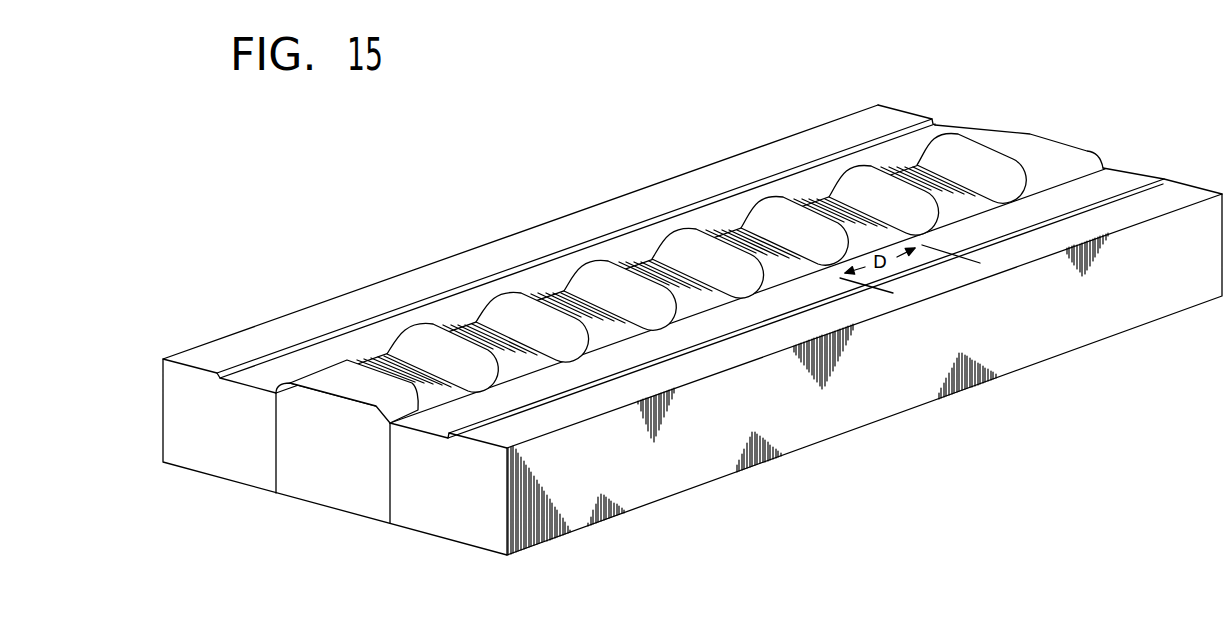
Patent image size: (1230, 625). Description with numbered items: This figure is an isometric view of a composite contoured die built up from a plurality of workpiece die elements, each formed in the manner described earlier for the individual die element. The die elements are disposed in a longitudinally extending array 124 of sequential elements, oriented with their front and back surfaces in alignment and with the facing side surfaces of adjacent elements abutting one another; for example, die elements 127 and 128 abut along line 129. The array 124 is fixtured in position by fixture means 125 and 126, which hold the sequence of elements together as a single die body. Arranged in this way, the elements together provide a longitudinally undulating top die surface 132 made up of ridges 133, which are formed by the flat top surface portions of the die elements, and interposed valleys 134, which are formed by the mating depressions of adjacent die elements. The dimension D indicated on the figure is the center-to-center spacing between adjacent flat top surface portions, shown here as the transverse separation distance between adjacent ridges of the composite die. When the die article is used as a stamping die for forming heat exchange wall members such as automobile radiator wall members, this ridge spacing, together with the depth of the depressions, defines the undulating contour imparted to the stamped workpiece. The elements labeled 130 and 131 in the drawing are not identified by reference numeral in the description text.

The array 124 is at (1103, 147).
The fixture means 125 is at (647, 483).
The fixture means 126 is at (220, 460).
The die element 127 is at (835, 197).
The die element 128 is at (722, 240).
The line 129 is at (762, 238).
The end ridge 130 is at (1013, 147).
The end ridge 131 is at (318, 492).
The top die surface 132 is at (493, 322).
The ridges 133 is at (628, 275).
The valleys 134 is at (575, 290).